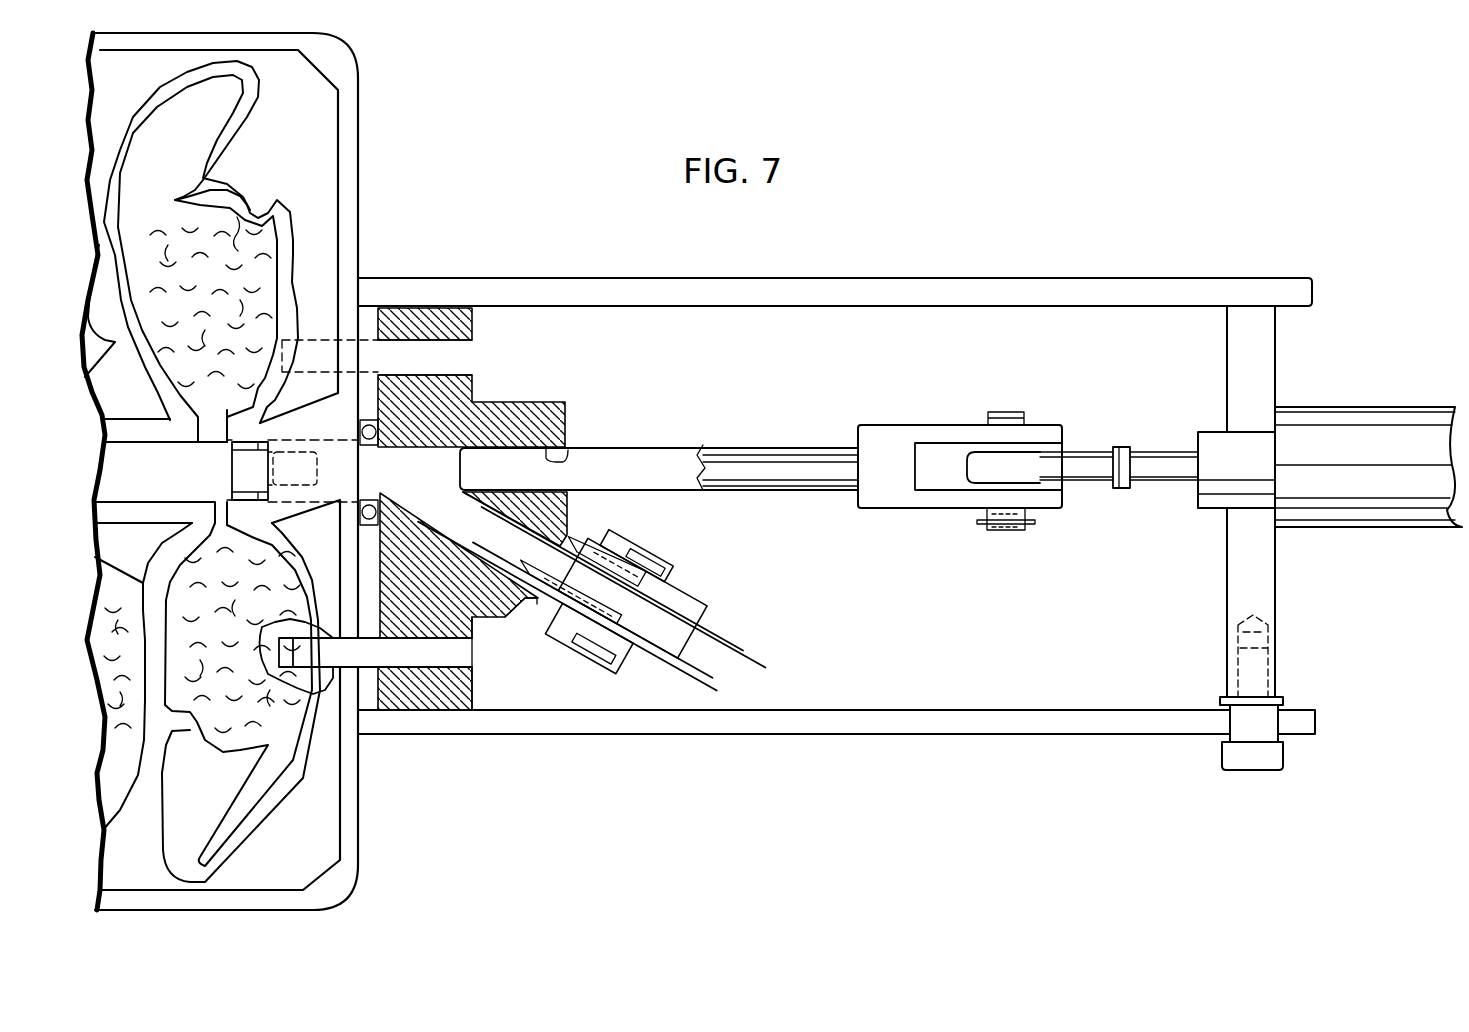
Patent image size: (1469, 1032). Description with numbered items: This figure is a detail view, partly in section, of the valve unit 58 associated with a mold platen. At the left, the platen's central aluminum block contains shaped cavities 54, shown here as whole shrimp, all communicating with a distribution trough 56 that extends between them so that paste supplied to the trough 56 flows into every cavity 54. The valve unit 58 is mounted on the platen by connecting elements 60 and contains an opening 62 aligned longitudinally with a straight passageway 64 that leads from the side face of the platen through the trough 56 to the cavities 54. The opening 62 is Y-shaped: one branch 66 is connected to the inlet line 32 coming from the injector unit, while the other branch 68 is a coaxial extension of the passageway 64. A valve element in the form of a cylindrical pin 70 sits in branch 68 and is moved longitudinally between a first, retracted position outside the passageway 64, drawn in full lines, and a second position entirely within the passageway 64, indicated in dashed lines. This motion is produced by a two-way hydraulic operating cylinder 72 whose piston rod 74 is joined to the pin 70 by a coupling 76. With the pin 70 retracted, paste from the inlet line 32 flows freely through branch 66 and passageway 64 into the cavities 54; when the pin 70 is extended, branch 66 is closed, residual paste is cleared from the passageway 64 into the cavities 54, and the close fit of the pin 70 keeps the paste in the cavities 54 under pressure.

The inlet line 32 is at (747, 646).
The shaped cavities 54 is at (237, 200).
The distribution trough 56 is at (168, 482).
The valve unit 58 is at (880, 274).
The connecting elements 60 is at (463, 357).
The opening 62 is at (456, 471).
The straight passageway 64 is at (337, 492).
The branch 66 is at (563, 532).
The branch 68 is at (566, 452).
The cylindrical pin 70 is at (320, 472).
The two-way hydraulic operating cylinder 72 is at (1402, 412).
The piston rod 74 is at (1166, 454).
The coupling 76 is at (957, 428).